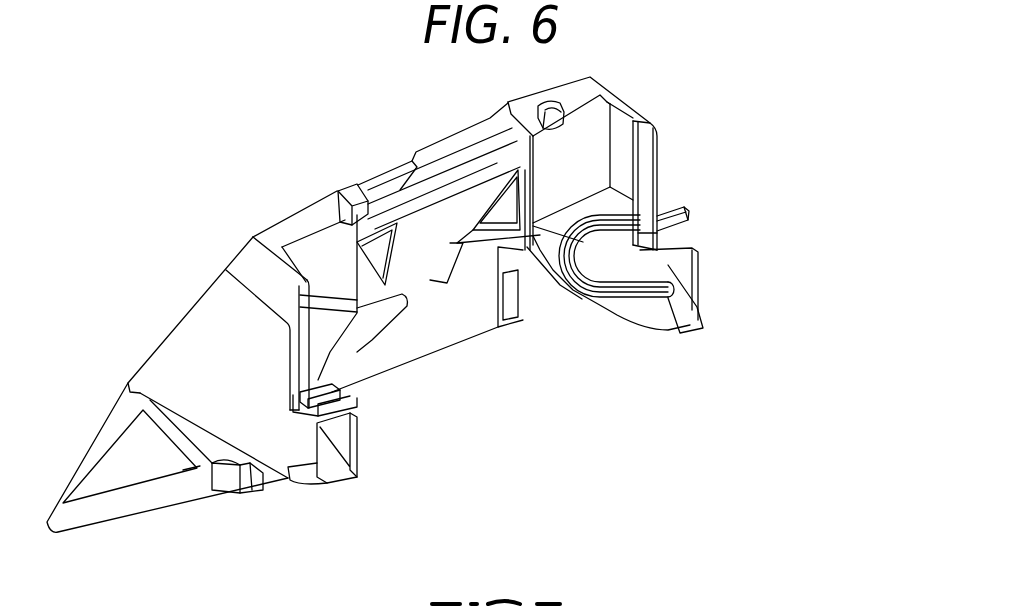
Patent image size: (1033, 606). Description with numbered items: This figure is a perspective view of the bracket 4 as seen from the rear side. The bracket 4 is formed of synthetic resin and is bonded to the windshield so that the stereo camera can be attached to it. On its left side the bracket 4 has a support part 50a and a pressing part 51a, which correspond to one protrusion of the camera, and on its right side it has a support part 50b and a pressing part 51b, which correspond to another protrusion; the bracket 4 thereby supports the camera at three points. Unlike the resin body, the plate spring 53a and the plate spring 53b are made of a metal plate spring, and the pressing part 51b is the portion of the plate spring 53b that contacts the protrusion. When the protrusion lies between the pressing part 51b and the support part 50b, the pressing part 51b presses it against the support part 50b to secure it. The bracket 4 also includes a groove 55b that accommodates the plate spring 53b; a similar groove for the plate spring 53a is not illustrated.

The bracket 4 is at (225, 256).
The support part 50a is at (328, 487).
The support part 50b is at (673, 342).
The pressing part 51a is at (330, 402).
The pressing part 51b is at (692, 243).
The plate spring 53a is at (332, 389).
The plate spring 53b is at (690, 212).
The groove 55b is at (616, 298).